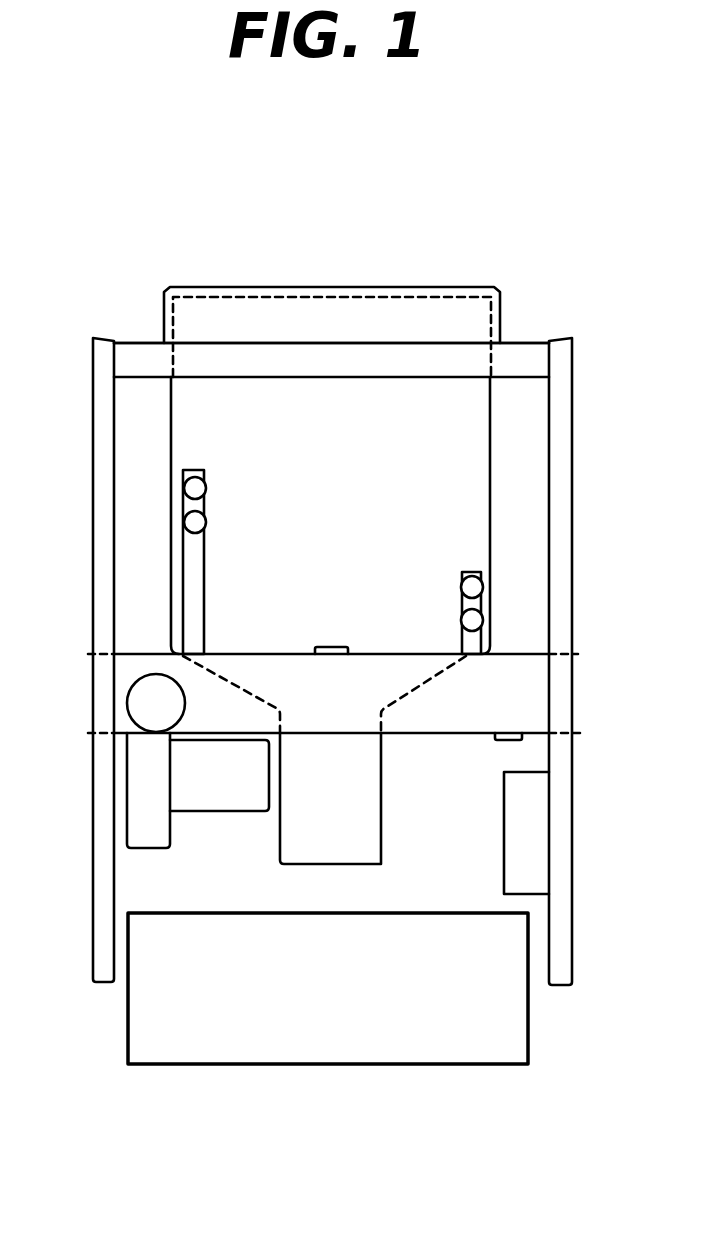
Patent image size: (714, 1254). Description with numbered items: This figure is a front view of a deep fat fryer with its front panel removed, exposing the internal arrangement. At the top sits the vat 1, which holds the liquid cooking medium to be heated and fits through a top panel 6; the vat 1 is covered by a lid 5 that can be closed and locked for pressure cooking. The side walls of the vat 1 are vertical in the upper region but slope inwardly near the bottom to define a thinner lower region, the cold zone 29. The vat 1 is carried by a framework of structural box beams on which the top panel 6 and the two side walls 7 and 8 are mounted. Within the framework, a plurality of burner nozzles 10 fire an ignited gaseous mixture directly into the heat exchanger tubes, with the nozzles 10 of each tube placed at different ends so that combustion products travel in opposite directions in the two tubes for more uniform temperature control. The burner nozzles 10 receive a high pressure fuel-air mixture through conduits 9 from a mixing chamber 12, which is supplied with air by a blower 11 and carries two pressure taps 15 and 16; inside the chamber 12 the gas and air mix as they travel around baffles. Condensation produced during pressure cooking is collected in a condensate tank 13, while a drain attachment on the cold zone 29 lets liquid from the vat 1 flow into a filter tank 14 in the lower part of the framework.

The vat 1 is at (610, 428).
The lid 5 is at (163, 300).
The top panel 6 is at (530, 345).
The side wall 7 is at (573, 543).
The side wall 8 is at (93, 460).
The conduit 9 is at (204, 560).
The burner nozzle 10 is at (207, 482).
The blower 11 is at (147, 823).
The mixing chamber 12 is at (530, 708).
The condensate tank 13 is at (527, 845).
The filter tank 14 is at (150, 937).
The pressure tap 15 is at (327, 647).
The pressure tap 16 is at (495, 738).
The cold zone 29 is at (360, 840).